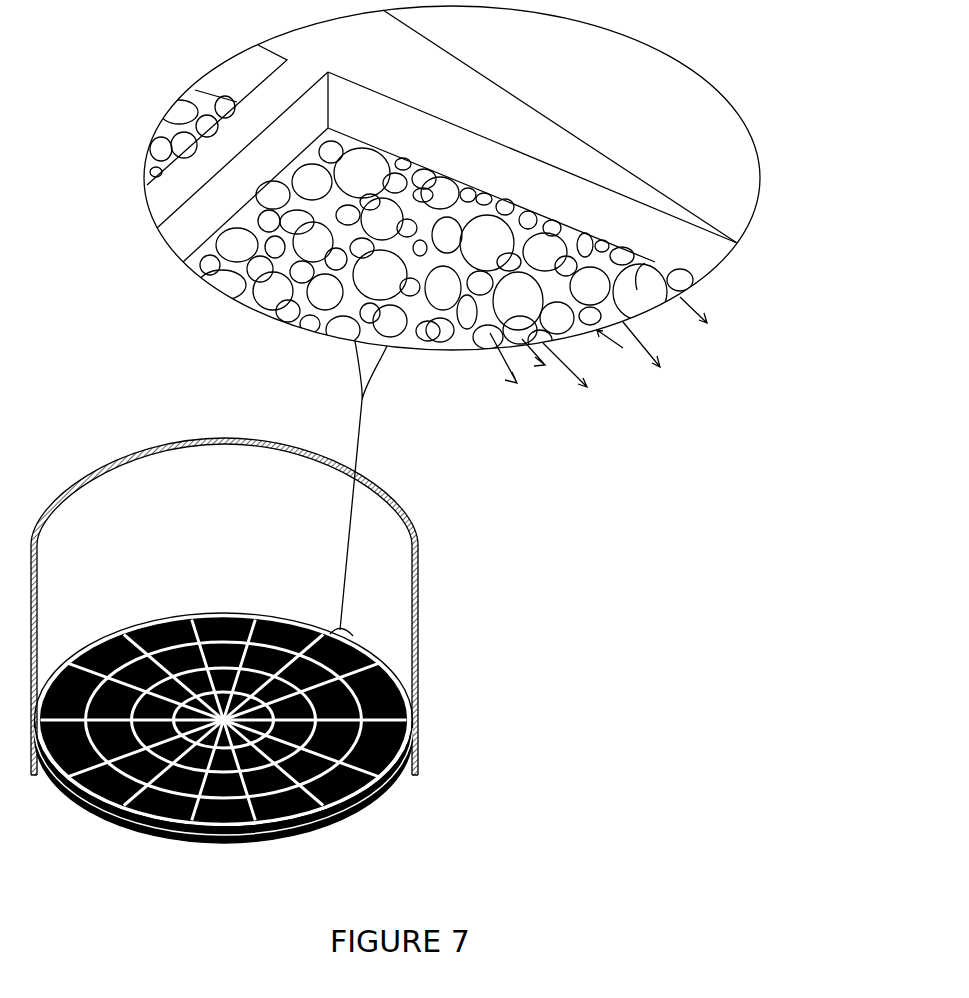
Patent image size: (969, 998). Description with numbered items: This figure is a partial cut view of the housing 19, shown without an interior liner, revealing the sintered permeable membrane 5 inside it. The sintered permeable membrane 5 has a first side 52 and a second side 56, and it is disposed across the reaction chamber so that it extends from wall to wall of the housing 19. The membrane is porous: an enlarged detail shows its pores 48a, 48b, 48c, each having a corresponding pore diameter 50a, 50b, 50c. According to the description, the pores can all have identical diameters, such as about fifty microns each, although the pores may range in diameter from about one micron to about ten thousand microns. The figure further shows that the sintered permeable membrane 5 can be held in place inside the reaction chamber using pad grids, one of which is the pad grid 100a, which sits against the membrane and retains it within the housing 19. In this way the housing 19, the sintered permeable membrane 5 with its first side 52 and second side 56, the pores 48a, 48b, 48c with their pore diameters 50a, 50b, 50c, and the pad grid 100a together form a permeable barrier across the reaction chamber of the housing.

The sintered permeable membrane 5 is at (60, 826).
The housing 19 is at (418, 590).
The pore 48a is at (465, 330).
The pore 48b is at (537, 345).
The pore 48c is at (617, 273).
The pore diameter 50a is at (517, 383).
The pore diameter 50b is at (583, 358).
The pore diameter 50c is at (665, 332).
The first side 52 is at (397, 782).
The second side 56 is at (258, 728).
The pad grid 100a is at (130, 827).